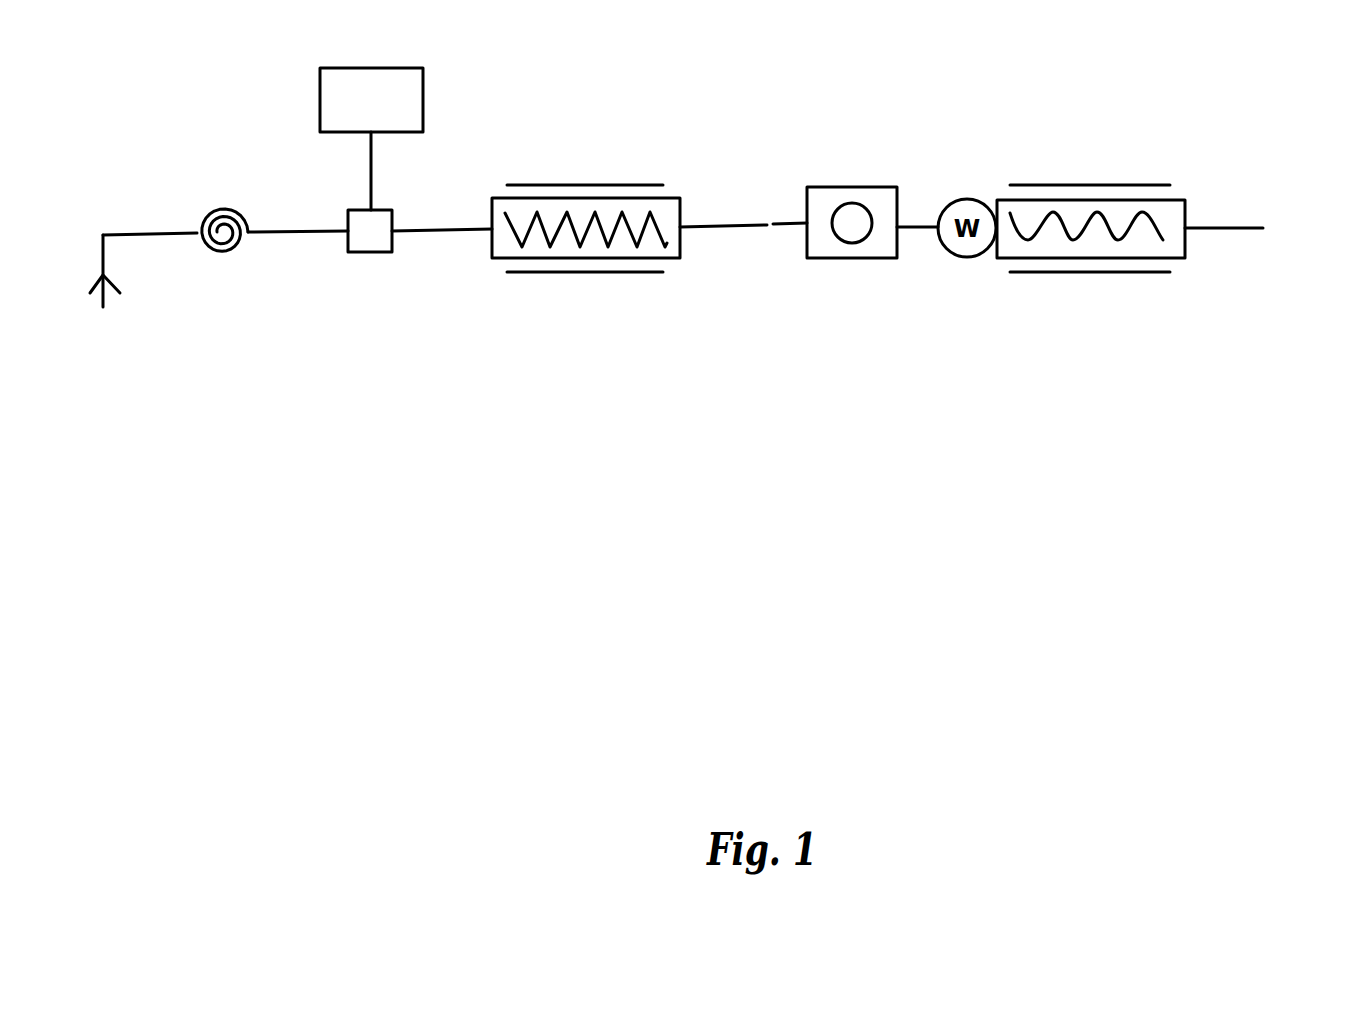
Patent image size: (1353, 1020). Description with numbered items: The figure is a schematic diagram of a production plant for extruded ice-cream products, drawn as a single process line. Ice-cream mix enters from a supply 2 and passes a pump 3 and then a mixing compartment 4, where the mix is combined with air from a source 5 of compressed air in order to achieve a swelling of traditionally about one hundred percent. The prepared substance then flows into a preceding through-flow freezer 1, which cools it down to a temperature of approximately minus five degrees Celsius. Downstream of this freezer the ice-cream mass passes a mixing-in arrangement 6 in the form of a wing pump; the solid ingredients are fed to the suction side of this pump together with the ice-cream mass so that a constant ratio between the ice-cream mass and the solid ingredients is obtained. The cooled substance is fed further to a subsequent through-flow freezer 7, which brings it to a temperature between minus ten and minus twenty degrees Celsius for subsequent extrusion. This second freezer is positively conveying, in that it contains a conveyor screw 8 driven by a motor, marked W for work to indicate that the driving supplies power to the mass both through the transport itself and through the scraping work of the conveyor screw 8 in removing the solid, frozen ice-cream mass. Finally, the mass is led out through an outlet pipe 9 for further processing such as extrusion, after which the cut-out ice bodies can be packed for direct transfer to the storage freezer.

The preceding through-flow freezer 1 is at (493, 250).
The supply 2 is at (105, 265).
The pump 3 is at (227, 217).
The mixing compartment 4 is at (371, 252).
The source of compressed air 5 is at (423, 122).
The mixing-in arrangement 6 is at (852, 187).
The subsequent through-flow freezer 7 is at (1185, 207).
The conveyor screw 8 is at (1075, 240).
The outlet pipe 9 is at (1218, 230).